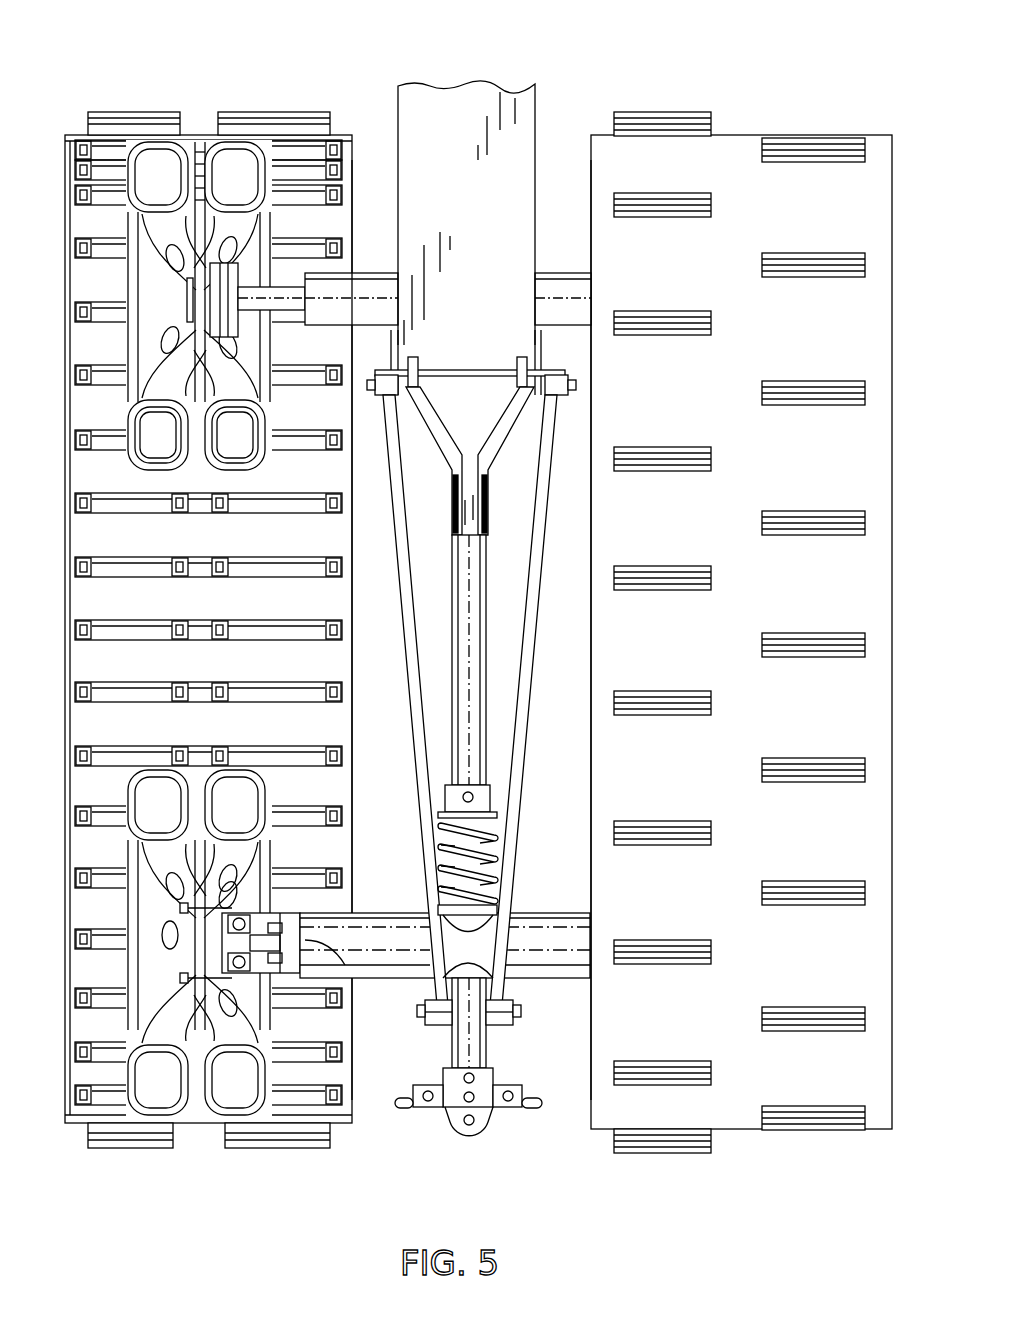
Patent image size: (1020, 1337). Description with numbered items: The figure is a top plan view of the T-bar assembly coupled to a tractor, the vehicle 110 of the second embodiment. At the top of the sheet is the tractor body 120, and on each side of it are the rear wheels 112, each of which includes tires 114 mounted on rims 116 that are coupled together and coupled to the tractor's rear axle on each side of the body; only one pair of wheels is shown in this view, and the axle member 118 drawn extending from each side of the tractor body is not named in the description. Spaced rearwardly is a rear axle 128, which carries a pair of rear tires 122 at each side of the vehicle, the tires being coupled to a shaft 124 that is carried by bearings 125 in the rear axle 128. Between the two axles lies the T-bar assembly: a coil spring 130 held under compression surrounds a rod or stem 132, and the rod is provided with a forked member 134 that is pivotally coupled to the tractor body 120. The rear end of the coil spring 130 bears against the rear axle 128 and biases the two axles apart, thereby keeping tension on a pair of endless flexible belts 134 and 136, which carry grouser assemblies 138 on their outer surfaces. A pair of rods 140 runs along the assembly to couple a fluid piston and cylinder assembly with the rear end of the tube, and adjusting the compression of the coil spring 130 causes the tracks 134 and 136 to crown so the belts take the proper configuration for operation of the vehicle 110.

The vehicle 110 is at (512, 1140).
The rear wheels 112 is at (158, 478).
The tires 114 is at (130, 458).
The rims 116 is at (305, 282).
The axle 118 is at (345, 300).
The tractor body 120 is at (519, 240).
The rear tires 122 is at (130, 797).
The shaft 124 is at (488, 731).
The bearings 125 is at (300, 925).
The rear axle 128 is at (511, 900).
The coil spring 130 is at (512, 797).
The rod or stem 132 is at (468, 582).
The forked member 134 is at (438, 430).
The endless flexible belt 136 is at (340, 1026).
The grouser assemblies 138 is at (145, 128).
The rods 140 is at (405, 615).